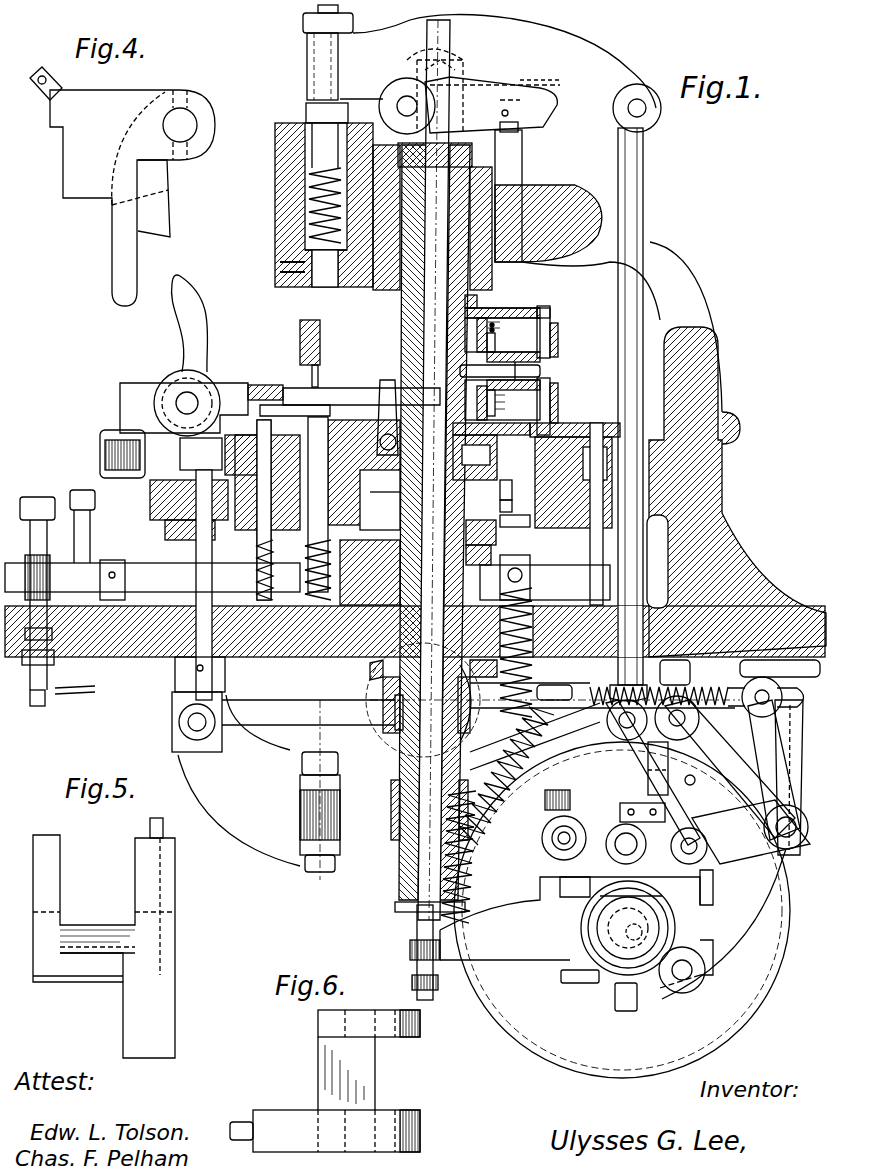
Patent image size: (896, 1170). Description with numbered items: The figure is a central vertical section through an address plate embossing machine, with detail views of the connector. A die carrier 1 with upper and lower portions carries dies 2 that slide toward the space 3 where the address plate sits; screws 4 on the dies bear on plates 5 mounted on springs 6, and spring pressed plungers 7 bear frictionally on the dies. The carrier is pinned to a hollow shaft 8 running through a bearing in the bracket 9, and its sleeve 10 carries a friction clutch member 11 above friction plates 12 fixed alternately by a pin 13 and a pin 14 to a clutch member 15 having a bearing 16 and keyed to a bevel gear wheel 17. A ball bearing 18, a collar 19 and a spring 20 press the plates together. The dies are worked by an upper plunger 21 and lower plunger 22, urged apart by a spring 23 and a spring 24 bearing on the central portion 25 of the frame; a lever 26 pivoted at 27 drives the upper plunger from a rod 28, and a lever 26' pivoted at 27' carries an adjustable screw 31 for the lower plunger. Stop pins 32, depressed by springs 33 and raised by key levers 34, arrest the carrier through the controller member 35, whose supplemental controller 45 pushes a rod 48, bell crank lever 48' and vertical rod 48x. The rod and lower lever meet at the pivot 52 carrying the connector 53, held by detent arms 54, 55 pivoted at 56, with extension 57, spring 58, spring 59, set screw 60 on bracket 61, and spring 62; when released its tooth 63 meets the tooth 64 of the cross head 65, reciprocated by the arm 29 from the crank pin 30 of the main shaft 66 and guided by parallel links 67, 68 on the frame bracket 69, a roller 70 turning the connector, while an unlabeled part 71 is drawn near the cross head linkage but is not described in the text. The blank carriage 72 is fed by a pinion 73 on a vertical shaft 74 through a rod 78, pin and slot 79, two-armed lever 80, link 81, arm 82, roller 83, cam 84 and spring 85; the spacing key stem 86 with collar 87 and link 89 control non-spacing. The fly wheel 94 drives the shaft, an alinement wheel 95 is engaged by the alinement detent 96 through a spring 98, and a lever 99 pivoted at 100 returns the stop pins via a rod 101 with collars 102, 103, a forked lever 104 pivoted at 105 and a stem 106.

In FIG. 1, the die carrier 1 is at (522, 314).
In FIG. 1, the dies 2 is at (553, 410).
In FIG. 1, the space 3 is at (540, 370).
In FIG. 1, the screws 4 is at (548, 318).
In FIG. 1, the plates 5 is at (513, 320).
In FIG. 1, the springs 6 is at (496, 400).
In FIG. 1, the spring pressed plungers 7 is at (520, 366).
In FIG. 1, the hollow shaft 8 is at (462, 268).
In FIG. 1, the bracket 9 is at (578, 222).
In FIG. 1, the sleeve 10 is at (493, 485).
In FIG. 1, the friction clutch member 11 is at (493, 499).
In FIG. 1, the friction plates 12 is at (481, 541).
In FIG. 1, the pin 13 is at (520, 535).
In FIG. 1, the pin 14 is at (512, 545).
In FIG. 1, the clutch member 15 is at (468, 565).
In FIG. 1, the bearing 16 is at (400, 578).
In FIG. 1, the bevel gear wheel 17 is at (417, 673).
In FIG. 1, the ball bearing 18 is at (400, 736).
In FIG. 1, the collar 19 is at (395, 838).
In FIG. 1, the spring 20 is at (391, 800).
In FIG. 1, the upper plunger 21 is at (306, 112).
In FIG. 1, the lower plunger 22 is at (305, 658).
In FIG. 1, the spring 23 is at (305, 200).
In FIG. 1, the spring 24 is at (335, 548).
In FIG. 1, the central portion of the fixed framework 25 is at (267, 510).
In FIG. 1, the lever 26 is at (498, 58).
In FIG. 1, the lever 26' is at (239, 781).
In FIG. 1, the pivot 27 is at (460, 91).
In FIG. 1, the pivot 27' is at (173, 725).
In FIG. 1, the link or rod 28 is at (645, 216).
In FIG. 1, the arm or link 29 is at (656, 900).
In FIG. 1, the crank pin 30 is at (580, 952).
In FIG. 1, the adjustable screw 31 is at (300, 784).
In FIG. 1, the stop pins 32 is at (258, 548).
In FIG. 1, the springs 33 is at (532, 514).
In FIG. 1, the key levers 34 is at (152, 580).
In FIG. 1, the controller member 35 is at (258, 388).
In FIG. 1, the trip lever or supplemental controller 45 is at (300, 392).
In FIG. 1, the rod 48 is at (341, 404).
In FIG. 1, the bell crank lever 48' is at (364, 475).
In FIG. 1, the vertical rod 48x is at (420, 918).
In FIG. 1, the pivot 52 is at (692, 690).
In FIG. 4, the latch or connector 53 is at (122, 186).
In FIG. 5, the latch or connector 53 is at (135, 890).
In FIG. 6, the latch or connector 53 is at (318, 1050).
In FIG. 1, the latch or connector 53 is at (560, 685).
In FIG. 1, the detent lever arm 54 is at (607, 720).
In FIG. 1, the detent lever arm 55 is at (545, 915).
In FIG. 1, the pivot 56 is at (551, 842).
In FIG. 1, the extension 57 is at (614, 850).
In FIG. 1, the spring 58 is at (548, 794).
In FIG. 1, the spring 59 is at (528, 868).
In FIG. 1, the set screw 60 is at (412, 946).
In FIG. 1, the bracket 61 is at (412, 960).
In FIG. 1, the spring 62 is at (506, 776).
In FIG. 4, the tooth 63 is at (150, 232).
In FIG. 5, the tooth 63 is at (100, 980).
In FIG. 6, the tooth 63 is at (378, 1080).
In FIG. 1, the tooth 63 is at (649, 768).
In FIG. 1, the tooth 64 is at (648, 776).
In FIG. 1, the cross head 65 is at (692, 782).
In FIG. 1, the main shaft 66 is at (724, 924).
In FIG. 1, the parallel link 67 is at (700, 738).
In FIG. 1, the parallel link 68 is at (755, 862).
In FIG. 1, the frame bracket 69 is at (795, 777).
In FIG. 1, the roller 70 is at (702, 887).
In FIG. 1, the link 71 is at (665, 812).
In FIG. 1, the carriage 72 is at (158, 428).
In FIG. 1, the pinion 73 is at (220, 455).
In FIG. 1, the vertical shaft 74 is at (200, 556).
In FIG. 1, the rod 78 is at (268, 702).
In FIG. 1, the pin and slot 79 is at (765, 688).
In FIG. 1, the two-armed lever 80 is at (774, 770).
In FIG. 1, the link 81 is at (653, 772).
In FIG. 1, the arm 82 is at (755, 930).
In FIG. 1, the roller 83 is at (680, 995).
In FIG. 1, the cam 84 is at (615, 994).
In FIG. 1, the spring 85 is at (742, 704).
In FIG. 1, the stem 86 is at (40, 500).
In FIG. 1, the collar 87 is at (33, 700).
In FIG. 1, the link 89 is at (80, 694).
In FIG. 1, the fly wheel 94 is at (527, 1036).
In FIG. 1, the alinement wheel 95 is at (560, 428).
In FIG. 1, the alinement detent 96 is at (617, 458).
In FIG. 1, the spring 98 is at (534, 638).
In FIG. 1, the lever 99 is at (285, 405).
In FIG. 1, the pivot 100 is at (310, 345).
In FIG. 1, the rod 101 is at (508, 195).
In FIG. 1, the collar 102 is at (460, 100).
In FIG. 1, the collar 103 is at (518, 126).
In FIG. 1, the lever 104 is at (520, 88).
In FIG. 1, the pivot 105 is at (545, 100).
In FIG. 1, the stem 106 is at (522, 192).